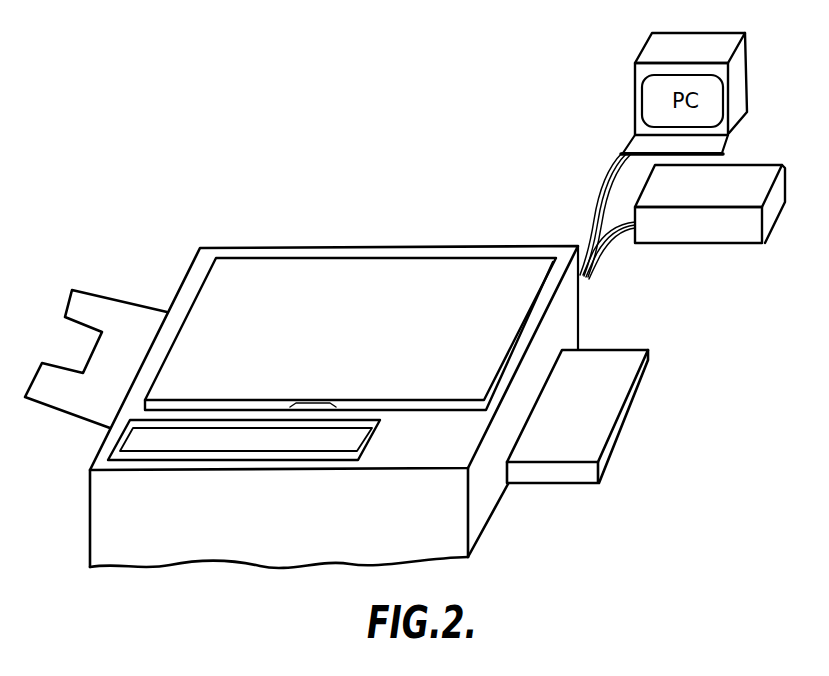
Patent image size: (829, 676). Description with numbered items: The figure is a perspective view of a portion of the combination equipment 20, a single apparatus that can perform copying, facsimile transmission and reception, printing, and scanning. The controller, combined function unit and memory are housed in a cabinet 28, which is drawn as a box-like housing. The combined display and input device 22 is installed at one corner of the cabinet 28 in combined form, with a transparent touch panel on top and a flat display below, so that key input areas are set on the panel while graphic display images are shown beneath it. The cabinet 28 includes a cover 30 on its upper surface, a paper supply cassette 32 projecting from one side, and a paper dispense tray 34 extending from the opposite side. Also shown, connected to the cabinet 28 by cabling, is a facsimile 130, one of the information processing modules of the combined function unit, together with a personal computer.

The combination equipment 20 is at (170, 272).
The combined display and input device 22 is at (162, 445).
The cabinet 28 is at (570, 314).
The cover 30 is at (515, 267).
The paper supply cassette 32 is at (618, 387).
The paper dispense tray 34 is at (86, 292).
The facsimile 130 is at (722, 243).